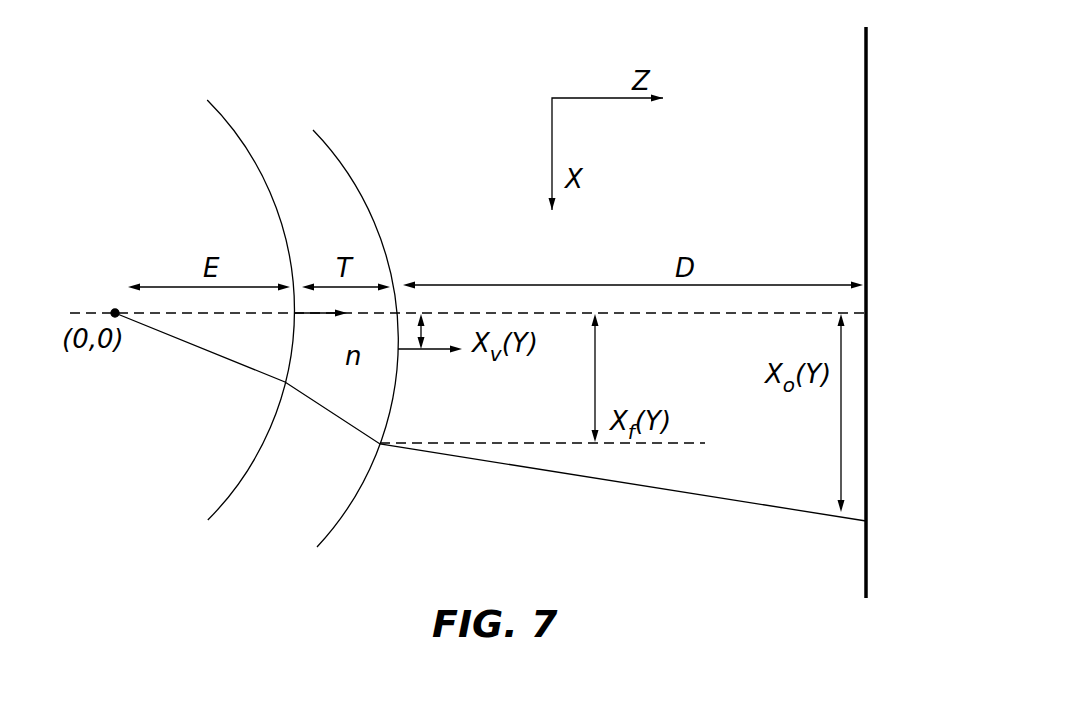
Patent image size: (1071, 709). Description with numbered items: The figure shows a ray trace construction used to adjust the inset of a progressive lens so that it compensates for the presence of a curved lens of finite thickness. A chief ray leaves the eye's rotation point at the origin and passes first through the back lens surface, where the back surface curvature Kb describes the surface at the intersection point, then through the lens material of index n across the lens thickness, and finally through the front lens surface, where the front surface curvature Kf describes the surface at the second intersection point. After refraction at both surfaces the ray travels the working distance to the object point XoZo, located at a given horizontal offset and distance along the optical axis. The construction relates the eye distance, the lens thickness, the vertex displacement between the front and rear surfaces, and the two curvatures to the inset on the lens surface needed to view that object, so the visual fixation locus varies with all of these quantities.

The back surface curvature Kb is at (281, 384).
The front surface curvature Kf is at (385, 451).
The object point XoZo is at (862, 524).